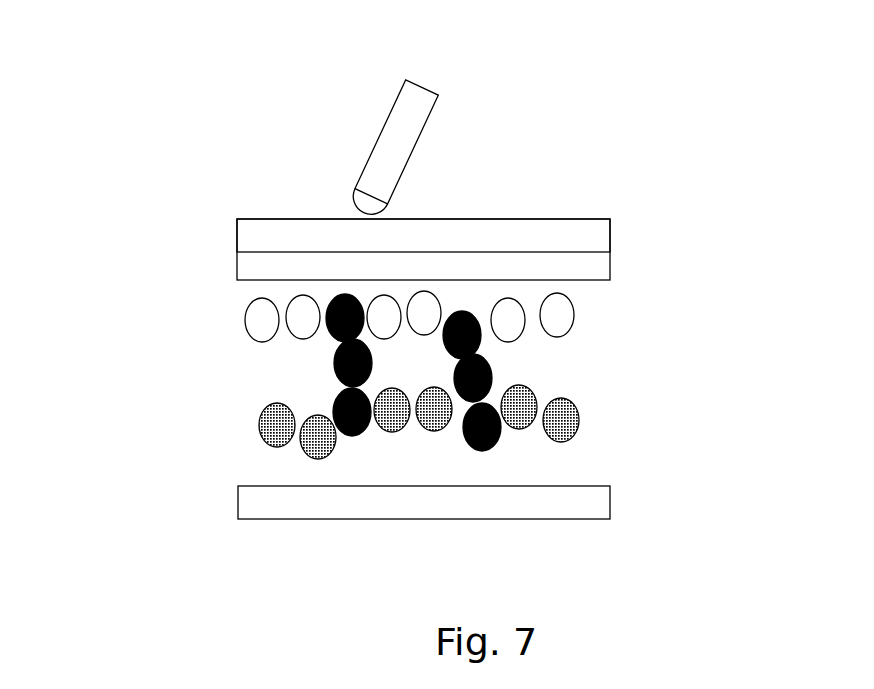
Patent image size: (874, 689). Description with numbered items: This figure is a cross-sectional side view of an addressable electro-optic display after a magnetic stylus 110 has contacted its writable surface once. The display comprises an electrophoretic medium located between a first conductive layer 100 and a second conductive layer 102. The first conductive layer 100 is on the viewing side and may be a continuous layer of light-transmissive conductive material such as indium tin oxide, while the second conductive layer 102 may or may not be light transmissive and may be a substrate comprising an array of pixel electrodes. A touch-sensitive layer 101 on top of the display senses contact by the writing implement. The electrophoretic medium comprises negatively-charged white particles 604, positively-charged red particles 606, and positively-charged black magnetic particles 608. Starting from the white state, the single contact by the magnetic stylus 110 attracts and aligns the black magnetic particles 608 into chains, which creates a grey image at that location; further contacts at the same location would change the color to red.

The magnetic stylus 110 is at (440, 79).
The first conductive layer 100 is at (237, 270).
The touch-sensitive layer 101 is at (237, 236).
The second conductive layer 102 is at (238, 507).
The white particles 604 is at (575, 315).
The red particles 606 is at (580, 415).
The black magnetic particles 608 is at (490, 370).